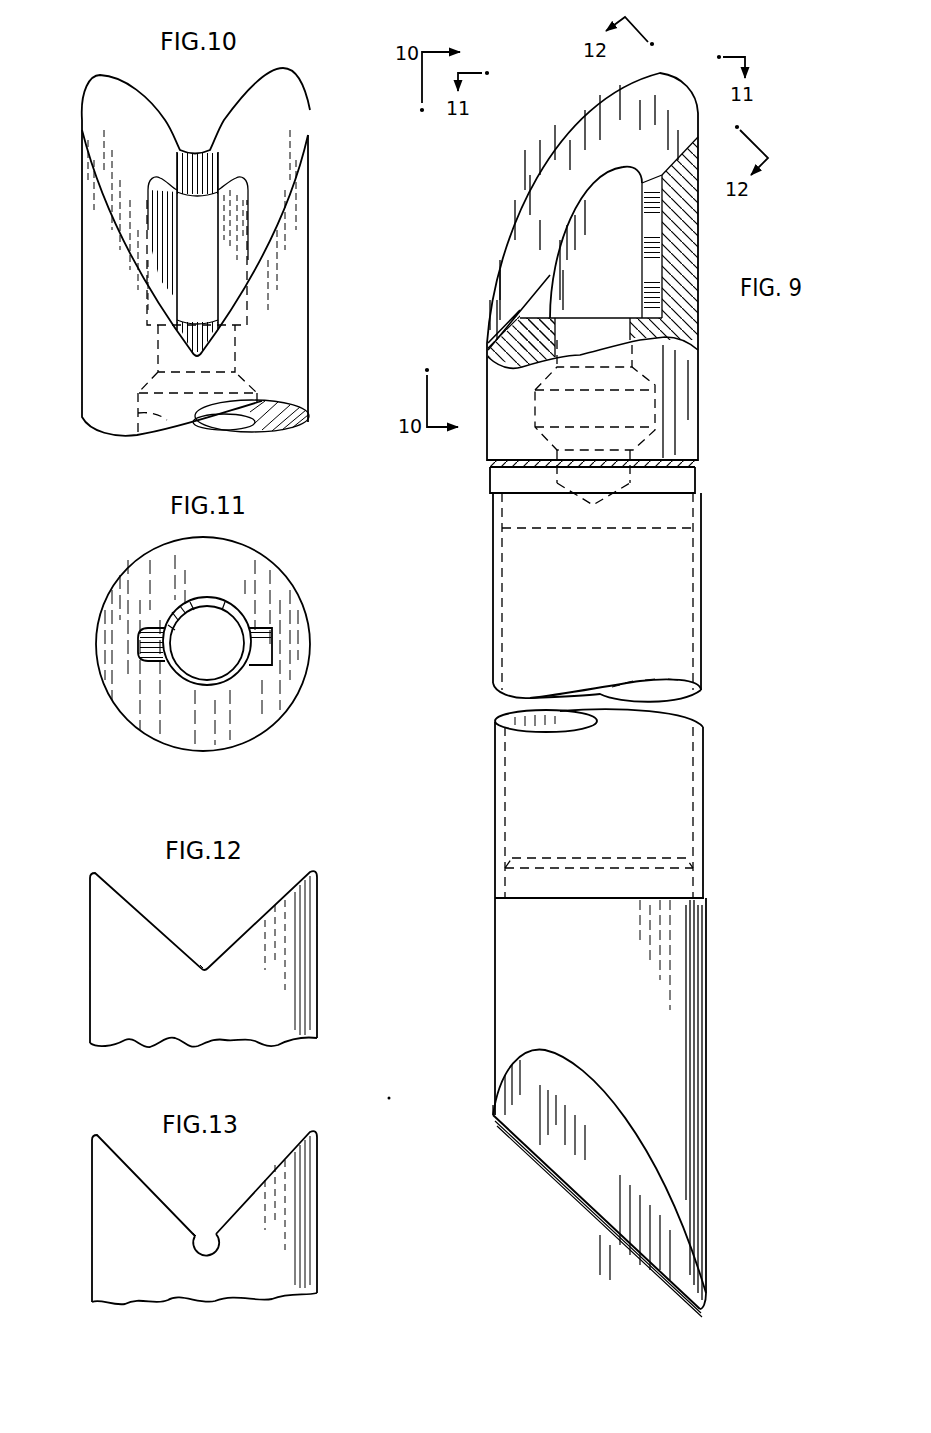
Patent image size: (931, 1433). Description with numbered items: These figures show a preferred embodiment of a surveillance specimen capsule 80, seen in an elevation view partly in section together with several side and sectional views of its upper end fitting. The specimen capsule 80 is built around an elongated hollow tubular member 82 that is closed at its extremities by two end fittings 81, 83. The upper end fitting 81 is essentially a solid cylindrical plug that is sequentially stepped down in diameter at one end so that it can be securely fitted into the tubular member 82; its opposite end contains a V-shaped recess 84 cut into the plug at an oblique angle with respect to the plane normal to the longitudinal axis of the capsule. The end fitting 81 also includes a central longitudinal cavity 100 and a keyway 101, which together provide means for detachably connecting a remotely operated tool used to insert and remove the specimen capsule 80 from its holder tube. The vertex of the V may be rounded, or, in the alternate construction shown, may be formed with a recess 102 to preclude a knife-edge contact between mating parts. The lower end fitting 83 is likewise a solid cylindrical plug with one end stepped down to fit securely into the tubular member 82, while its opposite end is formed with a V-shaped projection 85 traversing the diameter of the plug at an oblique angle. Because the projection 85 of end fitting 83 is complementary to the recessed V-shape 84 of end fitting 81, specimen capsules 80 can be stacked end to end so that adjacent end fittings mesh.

In FIG. 9, the surveillance specimen capsule 80 is at (662, 581).
In FIG. 9, the end fitting 81 is at (683, 370).
In FIG. 10, the end fitting 81 is at (110, 284).
In FIG. 11, the end fitting 81 is at (288, 575).
In FIG. 12, the end fitting 81 is at (290, 973).
In FIG. 13, the end fitting 81 is at (283, 1247).
In FIG. 9, the elongated hollow tubular member 82 is at (673, 768).
In FIG. 9, the end fitting 83 is at (662, 1001).
In FIG. 9, the V-shaped recess 84 is at (522, 267).
In FIG. 10, the V-shaped recess 84 is at (247, 123).
In FIG. 12, the V-shaped recess 84 is at (260, 917).
In FIG. 13, the V-shaped recess 84 is at (258, 1188).
In FIG. 9, the V-shaped projection 85 is at (598, 1195).
In FIG. 9, the central longitudinal cavity 100 is at (708, 400).
In FIG. 10, the central longitudinal cavity 100 is at (184, 429).
In FIG. 11, the central longitudinal cavity 100 is at (173, 652).
In FIG. 9, the keyway 101 is at (653, 265).
In FIG. 10, the keyway 101 is at (214, 248).
In FIG. 11, the keyway 101 is at (263, 648).
In FIG. 13, the recess 102 is at (193, 1245).